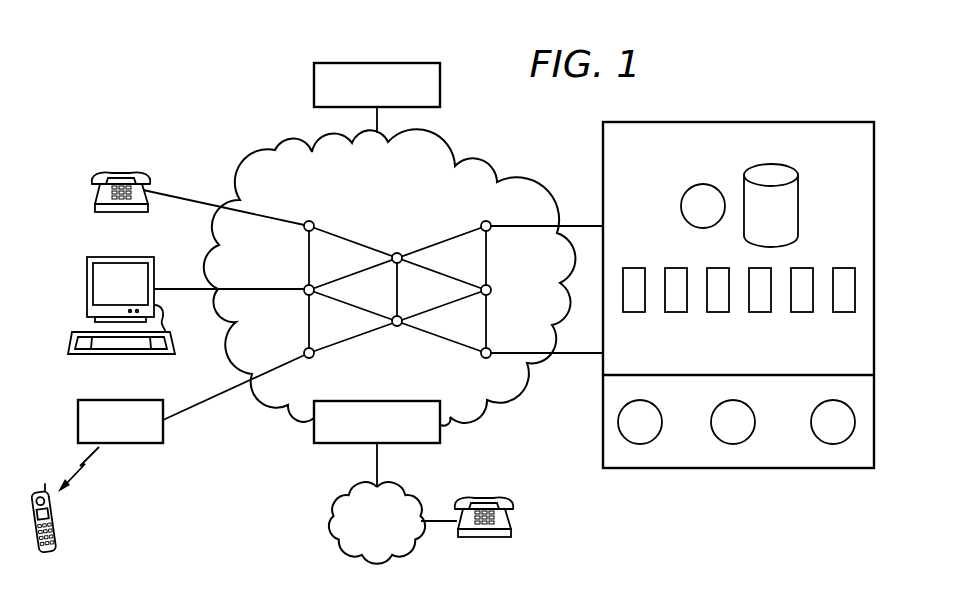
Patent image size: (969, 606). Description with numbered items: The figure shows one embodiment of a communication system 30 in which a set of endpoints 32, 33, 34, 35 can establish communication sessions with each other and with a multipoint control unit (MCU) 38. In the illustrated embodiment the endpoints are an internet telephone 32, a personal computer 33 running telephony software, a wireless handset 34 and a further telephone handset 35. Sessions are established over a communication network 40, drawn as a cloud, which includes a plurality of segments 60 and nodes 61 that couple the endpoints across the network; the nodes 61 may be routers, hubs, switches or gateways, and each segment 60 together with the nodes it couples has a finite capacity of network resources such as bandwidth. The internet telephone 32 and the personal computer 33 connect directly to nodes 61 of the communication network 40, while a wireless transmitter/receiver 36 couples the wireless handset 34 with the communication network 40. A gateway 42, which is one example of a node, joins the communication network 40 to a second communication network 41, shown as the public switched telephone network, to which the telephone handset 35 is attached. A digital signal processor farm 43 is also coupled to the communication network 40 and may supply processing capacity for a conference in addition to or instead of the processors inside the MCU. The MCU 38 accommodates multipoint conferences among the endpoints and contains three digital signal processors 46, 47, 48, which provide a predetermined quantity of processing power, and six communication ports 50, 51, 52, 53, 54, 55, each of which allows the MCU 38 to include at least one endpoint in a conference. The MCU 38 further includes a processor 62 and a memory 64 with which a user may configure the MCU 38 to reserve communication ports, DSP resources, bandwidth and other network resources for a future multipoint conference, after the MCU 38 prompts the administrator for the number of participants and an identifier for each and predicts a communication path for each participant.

The communication system 30 is at (210, 106).
The endpoint 32 is at (120, 170).
The endpoint 33 is at (87, 288).
The endpoint 34 is at (41, 555).
The endpoint 35 is at (483, 540).
The wireless transmitter/receiver 36 is at (78, 424).
The multipoint control unit (MCU) 38 is at (741, 121).
The communication network 40 is at (483, 166).
The communication network 41 is at (327, 518).
The gateway 42 is at (313, 429).
The digital signal processor farm 43 is at (379, 62).
The digital signal processor (DSP) 46 is at (658, 436).
The digital signal processor (DSP) 47 is at (751, 436).
The digital signal processor (DSP) 48 is at (816, 407).
The communication port 50 is at (633, 313).
The communication port 51 is at (677, 313).
The communication port 52 is at (718, 313).
The communication port 53 is at (761, 313).
The communication port 54 is at (803, 313).
The communication port 55 is at (845, 313).
The segment 60 is at (360, 243).
The node 61 is at (309, 221).
The processor 62 is at (681, 207).
The memory 64 is at (799, 207).